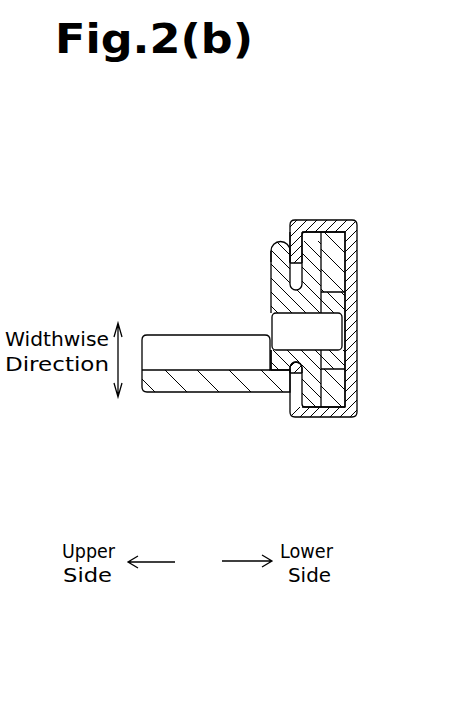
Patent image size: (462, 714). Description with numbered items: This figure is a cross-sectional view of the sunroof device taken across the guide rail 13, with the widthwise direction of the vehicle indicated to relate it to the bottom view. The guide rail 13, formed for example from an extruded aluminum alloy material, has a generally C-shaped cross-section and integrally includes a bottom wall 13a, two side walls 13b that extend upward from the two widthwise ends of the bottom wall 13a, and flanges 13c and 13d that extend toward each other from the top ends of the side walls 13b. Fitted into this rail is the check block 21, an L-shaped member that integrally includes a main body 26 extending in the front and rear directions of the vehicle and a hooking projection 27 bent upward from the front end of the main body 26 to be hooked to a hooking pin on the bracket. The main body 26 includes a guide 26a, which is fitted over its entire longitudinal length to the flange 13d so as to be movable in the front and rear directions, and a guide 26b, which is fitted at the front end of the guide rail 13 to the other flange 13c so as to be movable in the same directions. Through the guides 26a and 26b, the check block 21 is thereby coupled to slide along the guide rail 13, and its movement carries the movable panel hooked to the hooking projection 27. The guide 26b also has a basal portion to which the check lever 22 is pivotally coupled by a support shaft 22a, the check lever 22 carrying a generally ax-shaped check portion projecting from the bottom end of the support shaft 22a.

The guide rail 13 is at (359, 242).
The bottom wall 13a is at (353, 329).
The side walls 13b is at (326, 228).
The flange 13c is at (286, 252).
The flange 13d is at (292, 415).
The check block 21 is at (165, 347).
The check lever 22 is at (333, 282).
The support shaft 22a is at (333, 340).
The main body 26 is at (277, 304).
The guide 26a is at (285, 376).
The guide 26b is at (277, 272).
The hooking projection 27 is at (165, 382).